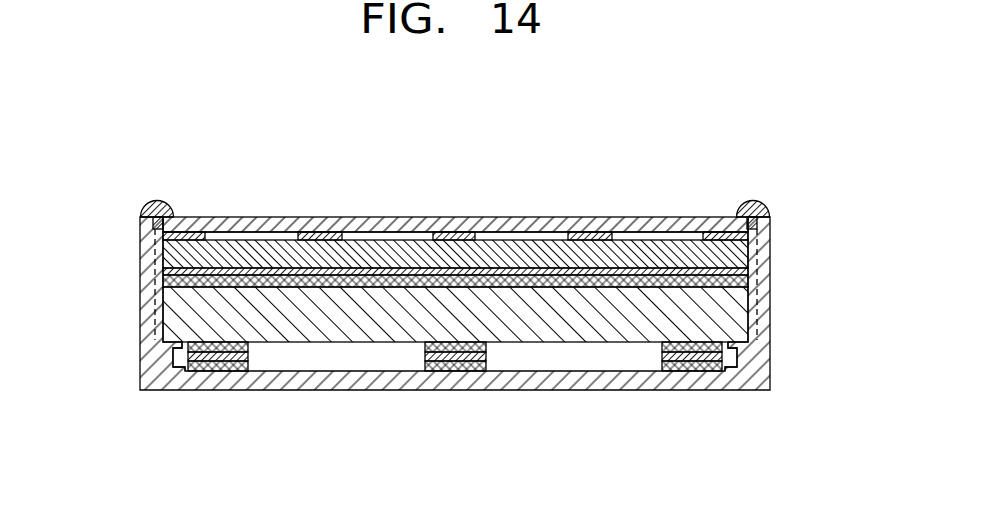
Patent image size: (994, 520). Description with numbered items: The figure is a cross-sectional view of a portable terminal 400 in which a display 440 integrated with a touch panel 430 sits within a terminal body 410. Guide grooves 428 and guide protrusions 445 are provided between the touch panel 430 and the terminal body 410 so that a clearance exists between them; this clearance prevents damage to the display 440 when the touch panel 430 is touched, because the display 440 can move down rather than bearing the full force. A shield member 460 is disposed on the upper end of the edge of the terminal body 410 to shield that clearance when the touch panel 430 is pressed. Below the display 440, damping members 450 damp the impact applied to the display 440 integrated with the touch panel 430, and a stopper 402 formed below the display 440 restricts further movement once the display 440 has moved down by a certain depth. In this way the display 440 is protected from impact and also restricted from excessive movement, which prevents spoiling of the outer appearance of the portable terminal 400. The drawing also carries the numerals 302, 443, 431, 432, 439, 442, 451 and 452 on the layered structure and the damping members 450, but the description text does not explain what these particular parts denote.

The portable terminal 400 is at (125, 148).
The terminal body 410 is at (149, 308).
The stopper 402 is at (172, 360).
The groove 302 is at (738, 358).
The shield member 460 is at (157, 203).
The guide groove 428 is at (152, 246).
The guide protrusion 445 is at (757, 247).
The window 443 is at (381, 226).
The touch panel 430 is at (455, 194).
The second sensing electrode 432 is at (592, 237).
The first sensing electrode 431 is at (547, 248).
The insulating layer 439 is at (607, 148).
The adhesive layer 442 is at (745, 282).
The display 440 is at (740, 312).
The damping member 450 is at (455, 398).
The first fastening part 451 is at (453, 366).
The second fastening part 452 is at (472, 343).